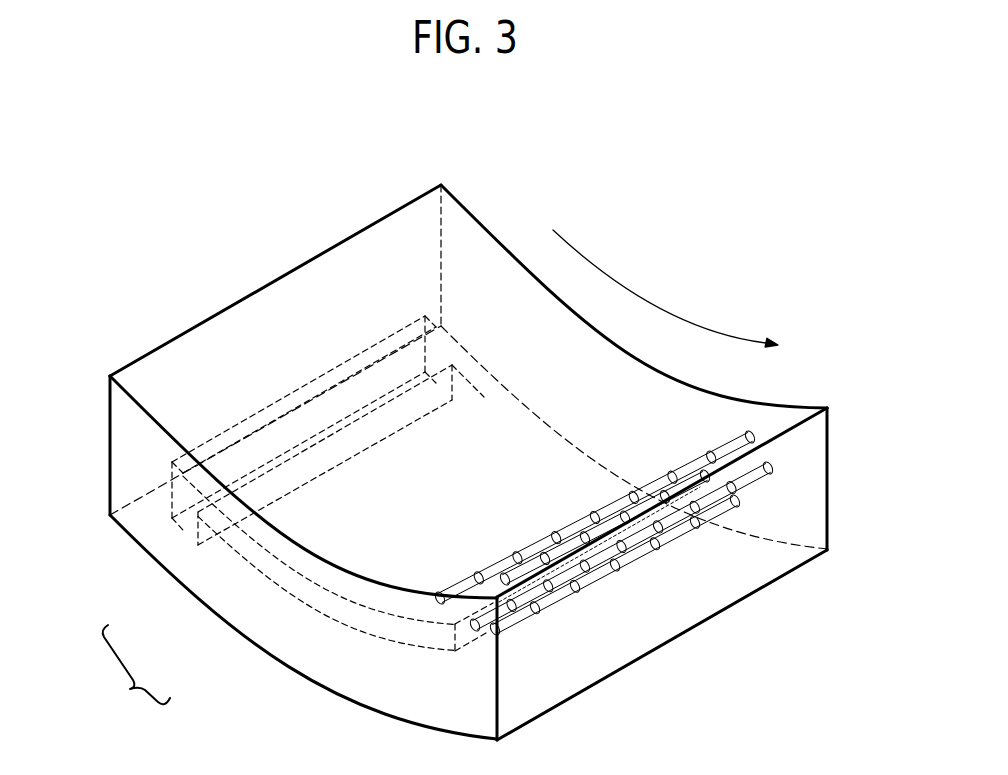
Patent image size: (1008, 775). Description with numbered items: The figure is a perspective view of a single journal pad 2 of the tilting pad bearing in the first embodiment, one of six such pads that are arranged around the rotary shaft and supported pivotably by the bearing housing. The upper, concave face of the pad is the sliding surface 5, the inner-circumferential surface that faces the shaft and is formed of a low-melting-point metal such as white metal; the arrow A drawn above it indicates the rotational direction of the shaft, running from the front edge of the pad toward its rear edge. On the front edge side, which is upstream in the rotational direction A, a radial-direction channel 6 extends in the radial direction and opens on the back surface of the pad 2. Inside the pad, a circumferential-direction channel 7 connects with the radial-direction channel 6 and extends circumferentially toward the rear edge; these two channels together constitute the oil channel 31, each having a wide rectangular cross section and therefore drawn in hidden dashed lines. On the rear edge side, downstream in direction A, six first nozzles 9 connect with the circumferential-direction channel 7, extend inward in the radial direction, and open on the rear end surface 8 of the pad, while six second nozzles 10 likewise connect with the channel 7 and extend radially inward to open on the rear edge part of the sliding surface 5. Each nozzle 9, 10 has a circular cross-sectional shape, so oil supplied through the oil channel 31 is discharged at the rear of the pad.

The journal pad 2 is at (279, 252).
The sliding surface 5 is at (493, 258).
The rotational direction A is at (657, 310).
The radial-direction channel 6 is at (182, 532).
The circumferential-direction channel 7 is at (245, 553).
The oil channel 31 is at (134, 676).
The rear end surface 8 is at (607, 657).
The first nozzle 9 is at (628, 557).
The second nozzle 10 is at (688, 520).